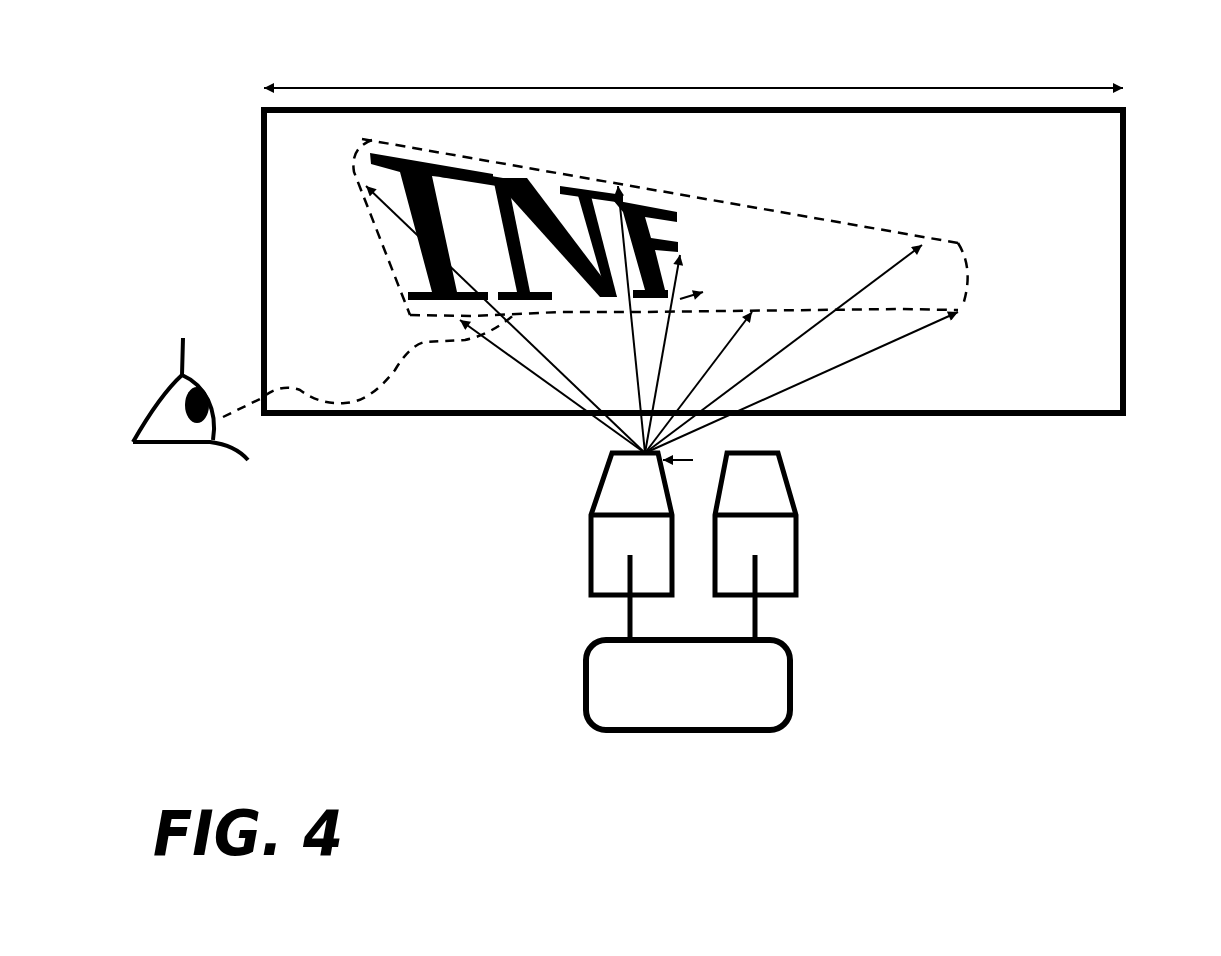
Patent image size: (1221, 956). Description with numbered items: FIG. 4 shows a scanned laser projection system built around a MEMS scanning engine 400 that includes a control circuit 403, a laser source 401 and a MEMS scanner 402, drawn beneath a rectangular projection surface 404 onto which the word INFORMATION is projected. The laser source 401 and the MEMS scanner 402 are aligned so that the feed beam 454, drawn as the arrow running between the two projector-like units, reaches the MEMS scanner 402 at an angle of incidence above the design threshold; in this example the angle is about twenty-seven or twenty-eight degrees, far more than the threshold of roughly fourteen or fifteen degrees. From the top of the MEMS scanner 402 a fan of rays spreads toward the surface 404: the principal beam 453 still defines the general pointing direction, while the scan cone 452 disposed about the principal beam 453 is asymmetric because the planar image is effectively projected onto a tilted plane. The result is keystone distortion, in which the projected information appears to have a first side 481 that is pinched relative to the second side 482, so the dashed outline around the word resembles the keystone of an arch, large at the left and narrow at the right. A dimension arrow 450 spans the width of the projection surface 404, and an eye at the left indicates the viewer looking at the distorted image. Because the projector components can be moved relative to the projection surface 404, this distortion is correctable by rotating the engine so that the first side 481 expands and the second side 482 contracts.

The MEMS scanning engine 400 is at (656, 582).
The laser source 401 is at (770, 487).
The MEMS scanner 402 is at (650, 500).
The control circuit 403 is at (633, 685).
The projection surface 404 is at (1093, 357).
The display width 450 is at (568, 86).
The scan cone 452 is at (897, 355).
The principal beam 453 is at (663, 370).
The feed beam 454 is at (693, 460).
The first side 481 is at (968, 277).
The second side 482 is at (367, 213).